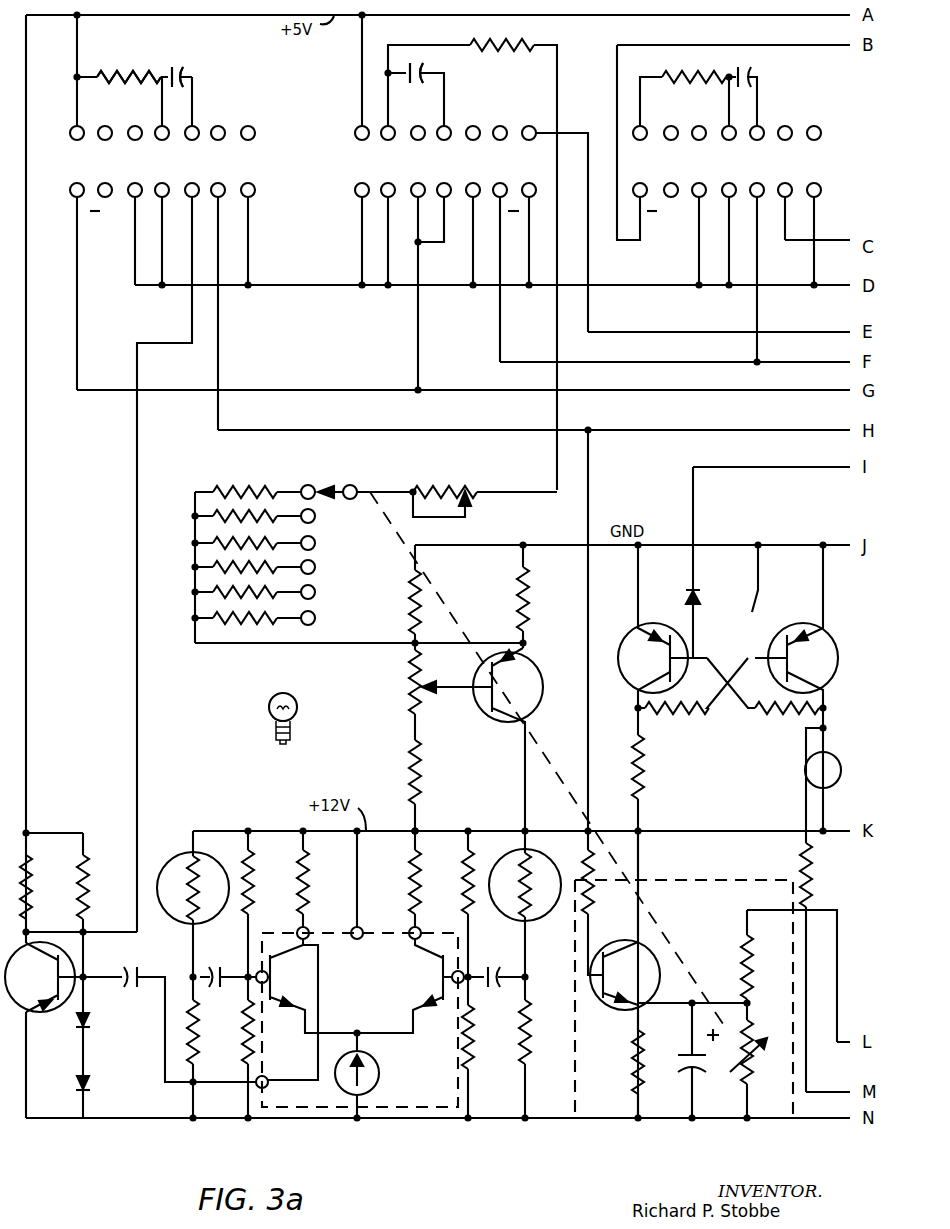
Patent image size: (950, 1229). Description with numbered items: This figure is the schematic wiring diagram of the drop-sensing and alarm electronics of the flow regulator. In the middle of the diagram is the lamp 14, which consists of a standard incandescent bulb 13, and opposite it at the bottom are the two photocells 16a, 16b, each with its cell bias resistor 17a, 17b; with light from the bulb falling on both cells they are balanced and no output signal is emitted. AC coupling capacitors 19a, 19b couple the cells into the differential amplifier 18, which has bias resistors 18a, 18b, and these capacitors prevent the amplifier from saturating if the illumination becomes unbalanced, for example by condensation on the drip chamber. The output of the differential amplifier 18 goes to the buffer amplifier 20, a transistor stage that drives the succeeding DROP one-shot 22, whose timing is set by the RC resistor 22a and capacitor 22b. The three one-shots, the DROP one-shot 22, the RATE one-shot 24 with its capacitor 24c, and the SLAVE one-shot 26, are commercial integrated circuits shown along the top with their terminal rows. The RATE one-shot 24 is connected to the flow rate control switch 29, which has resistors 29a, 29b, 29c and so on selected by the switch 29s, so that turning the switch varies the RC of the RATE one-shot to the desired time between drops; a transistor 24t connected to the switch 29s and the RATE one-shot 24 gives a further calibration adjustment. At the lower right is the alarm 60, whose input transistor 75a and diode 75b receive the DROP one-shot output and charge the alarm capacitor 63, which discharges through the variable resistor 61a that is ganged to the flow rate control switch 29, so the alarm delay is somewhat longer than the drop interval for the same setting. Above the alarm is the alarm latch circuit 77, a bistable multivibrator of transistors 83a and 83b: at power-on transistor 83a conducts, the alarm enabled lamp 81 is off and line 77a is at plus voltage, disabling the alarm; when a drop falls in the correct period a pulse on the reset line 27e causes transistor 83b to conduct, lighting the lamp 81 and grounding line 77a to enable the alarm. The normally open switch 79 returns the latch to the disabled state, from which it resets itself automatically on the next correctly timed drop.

The DROP one-shot 22 is at (162, 471).
The timing RC resistor 22a is at (140, 72).
The timing capacitor 22b is at (182, 67).
The RATE one-shot 24 is at (471, 250).
The capacitor 24c is at (406, 64).
The transistor 24t is at (496, 652).
The SLAVE one-shot 26 is at (811, 101).
The flow rate control switch 29 is at (352, 540).
The resistor 29a is at (213, 494).
The resistor 29b is at (212, 516).
The resistor 29c is at (215, 542).
The switch 29s is at (323, 496).
The incandescent bulb 13 is at (293, 726).
The lamp 14 is at (230, 776).
The photocell 16a is at (174, 865).
The photocell 16b is at (519, 848).
The cell bias resistor 17a is at (192, 1028).
The cell bias resistor 17b is at (549, 1014).
The differential amplifier 18 is at (392, 1036).
The bias resistor 18a is at (250, 876).
The bias resistor 18b is at (466, 888).
The AC coupling capacitor 19a is at (230, 970).
The AC coupling capacitor 19b is at (510, 950).
The buffer amplifier 20 is at (66, 1012).
The alarm reset line 27e is at (762, 469).
The normally open switch 79 is at (754, 602).
The bistable multivibrator transistor 83a is at (688, 636).
The alarm latch transistor 83b is at (823, 630).
The alarm enabled lamp 81 is at (841, 761).
The alarm latch circuit 77 is at (718, 772).
The line 77a is at (806, 837).
The alarm 60 is at (735, 923).
The input transistor 75a is at (656, 956).
The diode 75b is at (674, 1000).
The alarm capacitor 63 is at (677, 1059).
The variable resistor 61a is at (756, 1089).